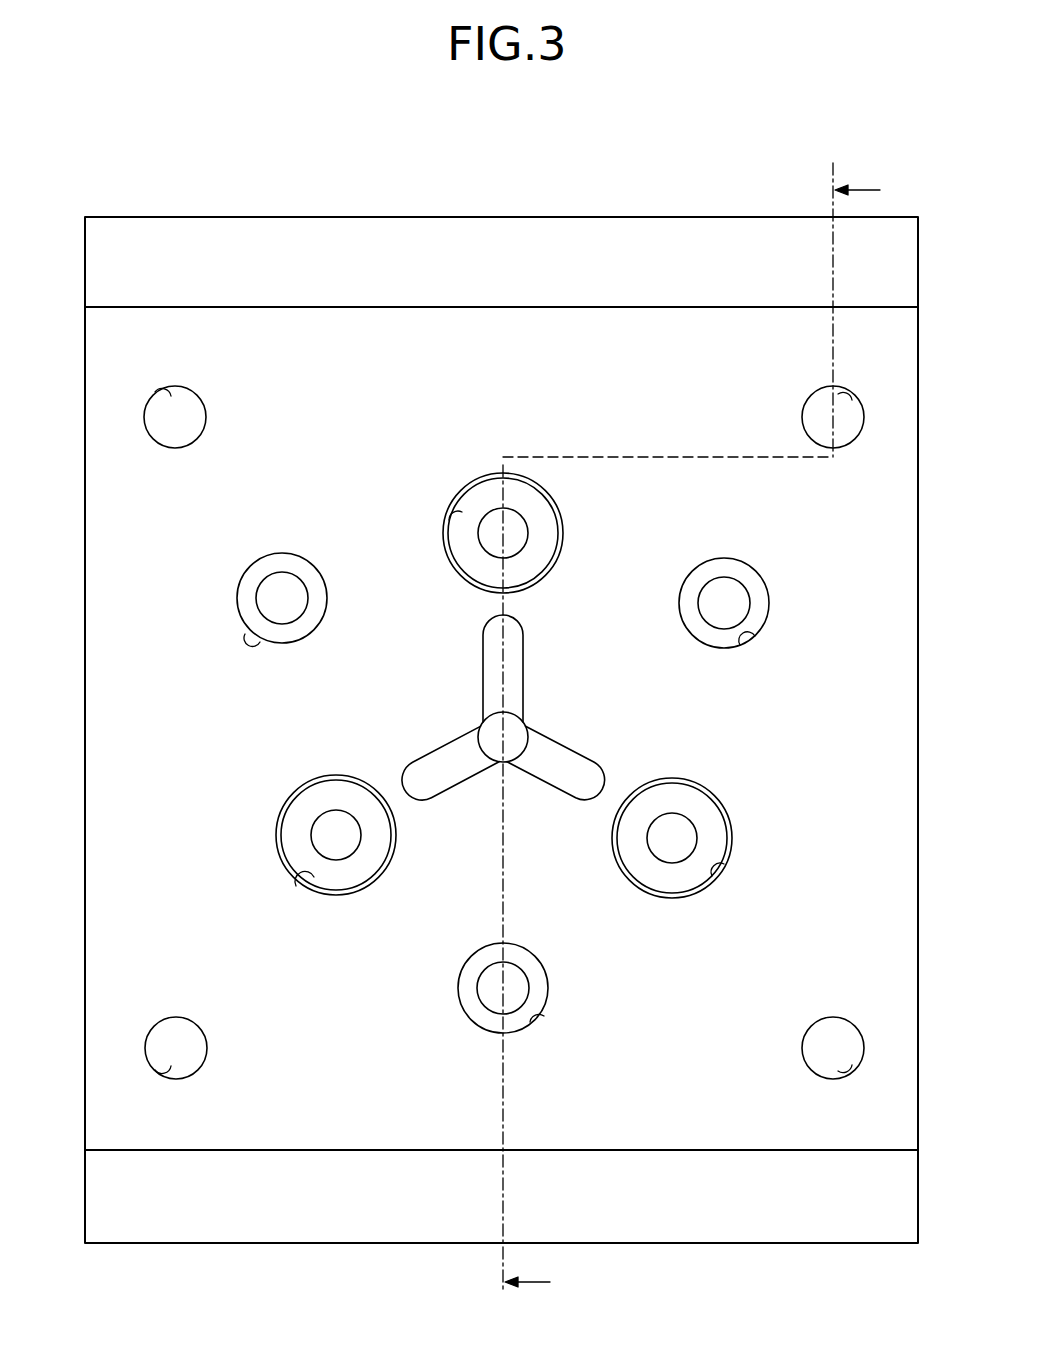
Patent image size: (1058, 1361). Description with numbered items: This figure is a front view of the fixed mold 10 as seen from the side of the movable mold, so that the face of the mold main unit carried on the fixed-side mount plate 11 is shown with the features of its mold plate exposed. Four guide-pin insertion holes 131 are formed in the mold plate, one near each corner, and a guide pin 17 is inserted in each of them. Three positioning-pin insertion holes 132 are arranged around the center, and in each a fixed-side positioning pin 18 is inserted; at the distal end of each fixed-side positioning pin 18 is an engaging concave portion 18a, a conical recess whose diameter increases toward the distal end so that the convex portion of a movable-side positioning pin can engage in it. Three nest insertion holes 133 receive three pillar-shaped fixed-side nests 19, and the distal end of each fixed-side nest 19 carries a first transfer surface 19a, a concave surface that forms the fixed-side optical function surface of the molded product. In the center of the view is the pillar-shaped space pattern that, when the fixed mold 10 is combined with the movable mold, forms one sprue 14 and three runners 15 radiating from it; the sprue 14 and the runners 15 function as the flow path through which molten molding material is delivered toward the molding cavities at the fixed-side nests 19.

The fixed mold 10 is at (879, 136).
The fixed-side mount plate 11 is at (545, 216).
The sprue 14 is at (478, 730).
The runners 15 is at (458, 757).
The guide pins 17 is at (148, 407).
The fixed-side positioning pins 18 is at (240, 580).
The engaging concave portion 18a is at (273, 602).
The fixed-side nests 19 is at (558, 504).
The first transfer surface 19a is at (512, 540).
The guide-pin insertion holes 131 is at (155, 392).
The positioning-pin insertion holes 132 is at (245, 634).
The nest insertion holes 133 is at (449, 520).